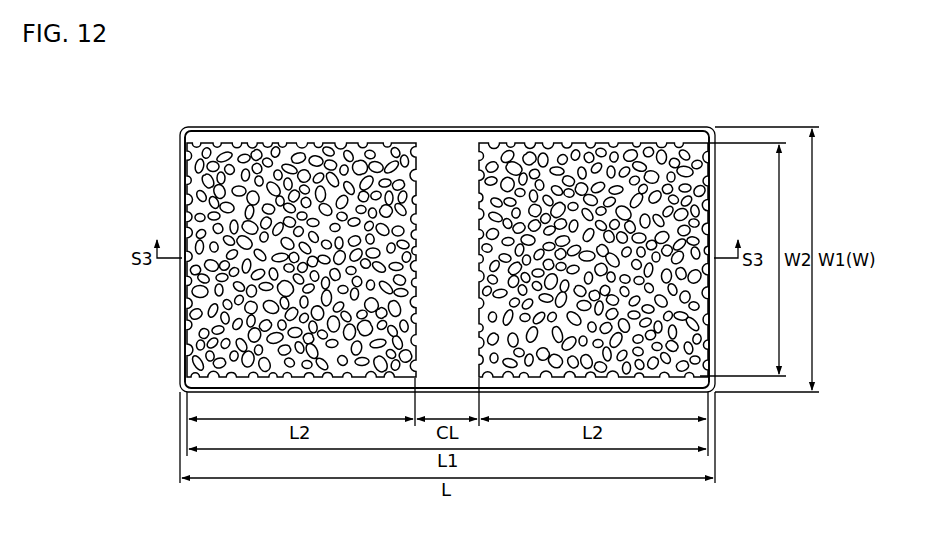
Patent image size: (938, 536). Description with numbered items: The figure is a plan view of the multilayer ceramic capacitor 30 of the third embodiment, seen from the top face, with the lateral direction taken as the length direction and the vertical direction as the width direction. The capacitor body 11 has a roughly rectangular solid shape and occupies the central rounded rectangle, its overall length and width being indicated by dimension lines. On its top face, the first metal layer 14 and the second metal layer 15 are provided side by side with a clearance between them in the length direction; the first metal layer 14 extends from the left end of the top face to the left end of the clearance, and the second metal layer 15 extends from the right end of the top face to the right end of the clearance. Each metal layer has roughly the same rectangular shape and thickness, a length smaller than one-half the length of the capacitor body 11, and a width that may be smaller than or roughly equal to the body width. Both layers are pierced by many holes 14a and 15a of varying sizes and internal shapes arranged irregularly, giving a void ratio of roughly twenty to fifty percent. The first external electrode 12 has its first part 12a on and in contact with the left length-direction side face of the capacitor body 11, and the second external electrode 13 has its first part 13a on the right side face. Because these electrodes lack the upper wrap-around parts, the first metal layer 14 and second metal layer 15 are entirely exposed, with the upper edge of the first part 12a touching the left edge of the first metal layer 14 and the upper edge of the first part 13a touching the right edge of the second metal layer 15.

The multilayer ceramic capacitor 30 is at (204, 127).
The capacitor body 11 is at (443, 127).
The first external electrode 12 is at (182, 200).
The first part 12a is at (182, 300).
The second external electrode 13 is at (713, 201).
The first part 13a is at (713, 301).
The first metal layer 14 is at (371, 143).
The holes 14a is at (331, 143).
The second metal layer 15 is at (530, 143).
The holes 15a is at (569, 143).